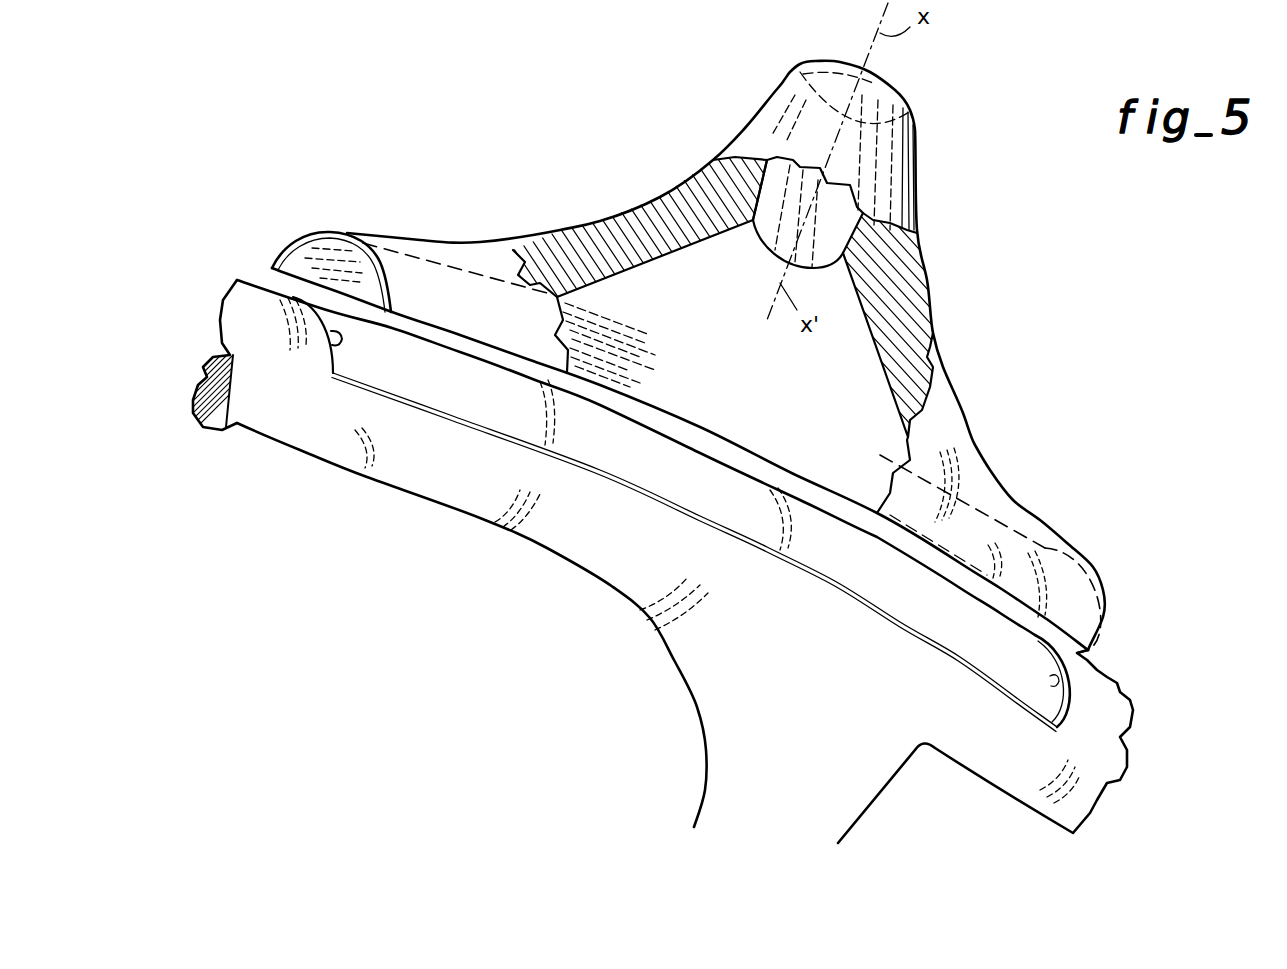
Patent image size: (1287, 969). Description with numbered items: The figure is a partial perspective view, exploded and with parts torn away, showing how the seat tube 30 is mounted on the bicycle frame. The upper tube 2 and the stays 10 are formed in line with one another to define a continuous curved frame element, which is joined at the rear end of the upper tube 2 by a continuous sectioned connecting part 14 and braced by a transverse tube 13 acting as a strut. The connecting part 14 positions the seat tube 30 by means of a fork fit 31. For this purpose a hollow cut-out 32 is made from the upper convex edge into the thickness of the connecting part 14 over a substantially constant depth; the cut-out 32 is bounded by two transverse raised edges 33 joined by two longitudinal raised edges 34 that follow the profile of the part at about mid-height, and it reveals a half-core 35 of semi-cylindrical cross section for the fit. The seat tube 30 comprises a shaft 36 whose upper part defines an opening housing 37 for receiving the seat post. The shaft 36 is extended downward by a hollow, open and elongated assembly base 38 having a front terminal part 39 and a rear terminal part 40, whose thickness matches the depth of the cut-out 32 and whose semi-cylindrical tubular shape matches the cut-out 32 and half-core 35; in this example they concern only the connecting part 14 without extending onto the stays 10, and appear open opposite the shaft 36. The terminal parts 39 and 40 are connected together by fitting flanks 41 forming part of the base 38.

The upper tube 2 is at (263, 433).
The stays 10 is at (1093, 773).
The transverse tube 13 is at (727, 770).
The continuous sectioned connecting part 14 is at (805, 683).
The seat tube 30 is at (945, 327).
The fork fit 31 is at (1095, 663).
The hollow cut-out 32 is at (657, 503).
The transverse raised edges 33 is at (327, 353).
The longitudinal raised edges 34 is at (477, 433).
The half-core 35 is at (697, 422).
The shaft 36 is at (917, 193).
The opening housing 37 is at (777, 247).
The hollow assembly base 38 is at (1108, 603).
The front terminal part 39 is at (420, 238).
The rear terminal part 40 is at (1040, 510).
The fitting flanks 41 is at (795, 407).